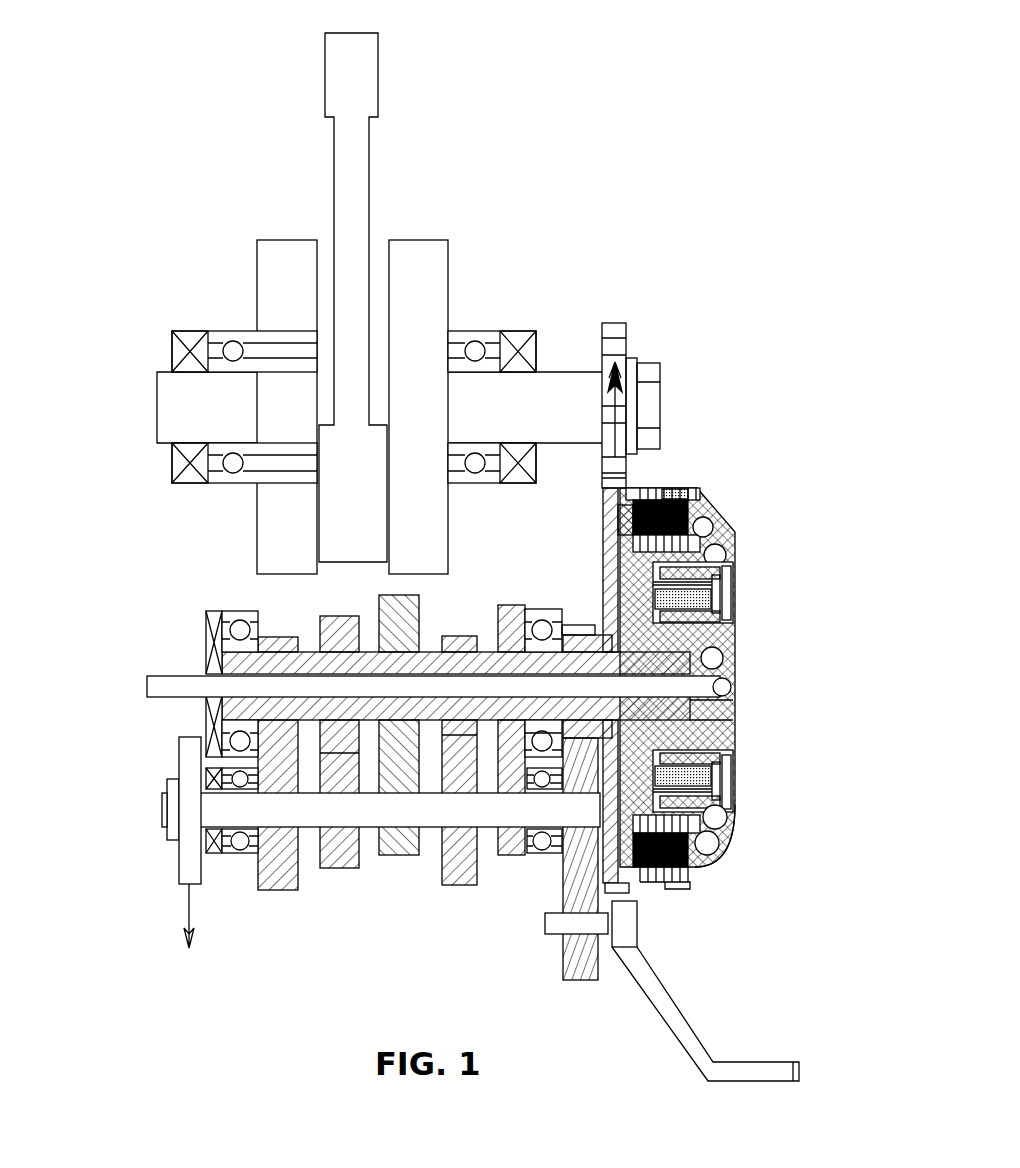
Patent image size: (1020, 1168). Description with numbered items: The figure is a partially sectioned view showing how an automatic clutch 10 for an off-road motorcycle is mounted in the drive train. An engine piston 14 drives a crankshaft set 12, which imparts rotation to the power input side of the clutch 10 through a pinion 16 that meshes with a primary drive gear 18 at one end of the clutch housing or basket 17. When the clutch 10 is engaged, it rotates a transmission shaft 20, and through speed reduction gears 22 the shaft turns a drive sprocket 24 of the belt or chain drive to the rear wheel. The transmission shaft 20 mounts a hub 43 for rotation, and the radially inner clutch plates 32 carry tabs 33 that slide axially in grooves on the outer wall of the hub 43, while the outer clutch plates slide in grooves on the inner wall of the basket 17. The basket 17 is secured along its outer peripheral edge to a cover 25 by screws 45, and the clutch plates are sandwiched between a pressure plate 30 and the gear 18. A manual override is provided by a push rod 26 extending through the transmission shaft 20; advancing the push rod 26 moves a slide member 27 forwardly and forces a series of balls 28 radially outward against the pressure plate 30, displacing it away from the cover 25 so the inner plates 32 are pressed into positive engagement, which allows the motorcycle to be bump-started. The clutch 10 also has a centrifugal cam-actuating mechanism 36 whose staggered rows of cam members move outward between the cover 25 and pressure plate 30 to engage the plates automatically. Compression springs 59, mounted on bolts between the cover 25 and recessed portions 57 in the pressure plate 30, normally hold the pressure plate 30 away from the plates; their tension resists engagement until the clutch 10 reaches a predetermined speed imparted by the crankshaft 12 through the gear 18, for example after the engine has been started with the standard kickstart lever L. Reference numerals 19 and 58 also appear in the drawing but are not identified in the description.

The automatic clutch 10 is at (740, 563).
The crankshaft set 12 is at (418, 270).
The engine piston 14 is at (347, 76).
The pinion 16 is at (623, 322).
The clutch housing or basket 17 is at (665, 492).
The primary drive gear 18 is at (615, 495).
The bearing 19 is at (582, 623).
The transmission shaft 20 is at (245, 663).
The speed reduction gears 22 is at (398, 863).
The drive sprocket 24 is at (187, 873).
The cover 25 is at (732, 832).
The push rod 26 is at (158, 688).
The slide member 27 is at (733, 702).
The balls 28 is at (712, 658).
The pressure plate 30 is at (703, 870).
The radially inner clutch plates 32 is at (697, 882).
The tabs 33 is at (710, 817).
The cam-actuating mechanism 36 is at (733, 850).
The hub 43 is at (613, 830).
The screws 45 is at (703, 492).
The recessed portions 57 is at (733, 575).
The coil 58 is at (712, 598).
The compression springs 59 is at (732, 617).
The kickstart lever L is at (650, 978).